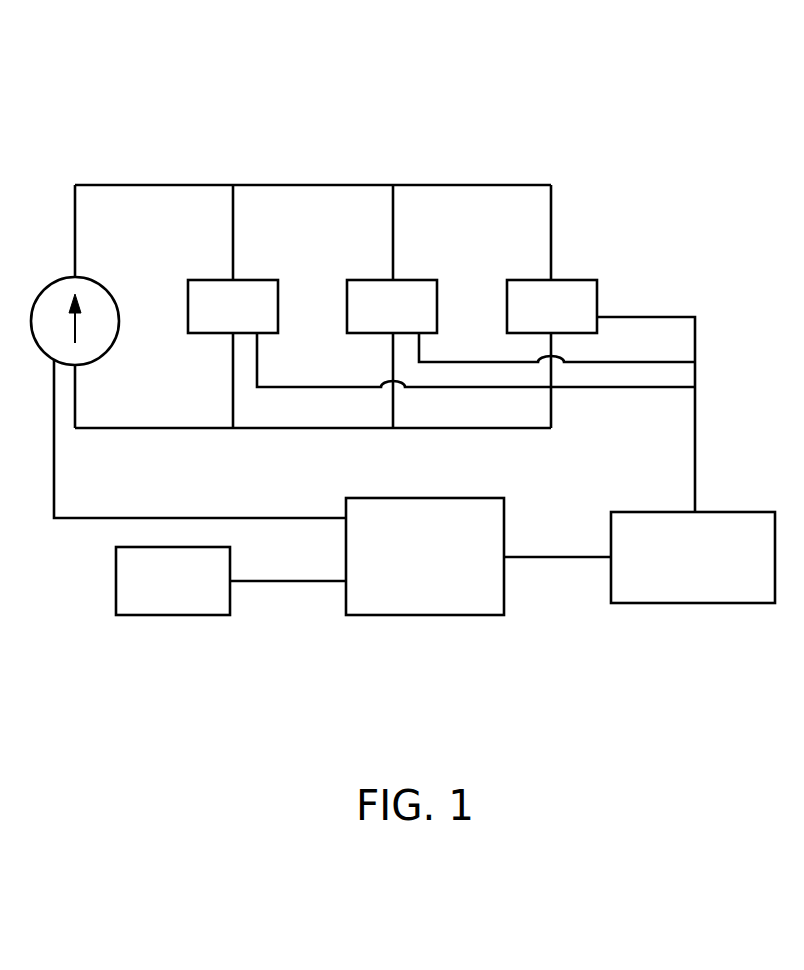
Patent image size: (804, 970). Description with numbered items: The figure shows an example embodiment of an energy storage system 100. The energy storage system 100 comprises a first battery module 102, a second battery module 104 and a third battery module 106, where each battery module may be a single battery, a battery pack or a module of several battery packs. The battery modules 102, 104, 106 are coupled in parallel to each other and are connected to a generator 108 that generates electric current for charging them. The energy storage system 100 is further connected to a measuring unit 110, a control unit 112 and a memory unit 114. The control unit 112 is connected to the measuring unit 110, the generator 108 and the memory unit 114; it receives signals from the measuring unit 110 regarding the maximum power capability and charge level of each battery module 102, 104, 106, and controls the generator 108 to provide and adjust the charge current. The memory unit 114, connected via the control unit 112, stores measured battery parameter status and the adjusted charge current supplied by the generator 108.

The energy storage system 100 is at (637, 81).
The first battery module 102 is at (265, 280).
The second battery module 104 is at (423, 280).
The third battery module 106 is at (584, 280).
The generator 108 is at (103, 282).
The measuring unit 110 is at (703, 603).
The control unit 112 is at (437, 615).
The memory unit 114 is at (167, 615).